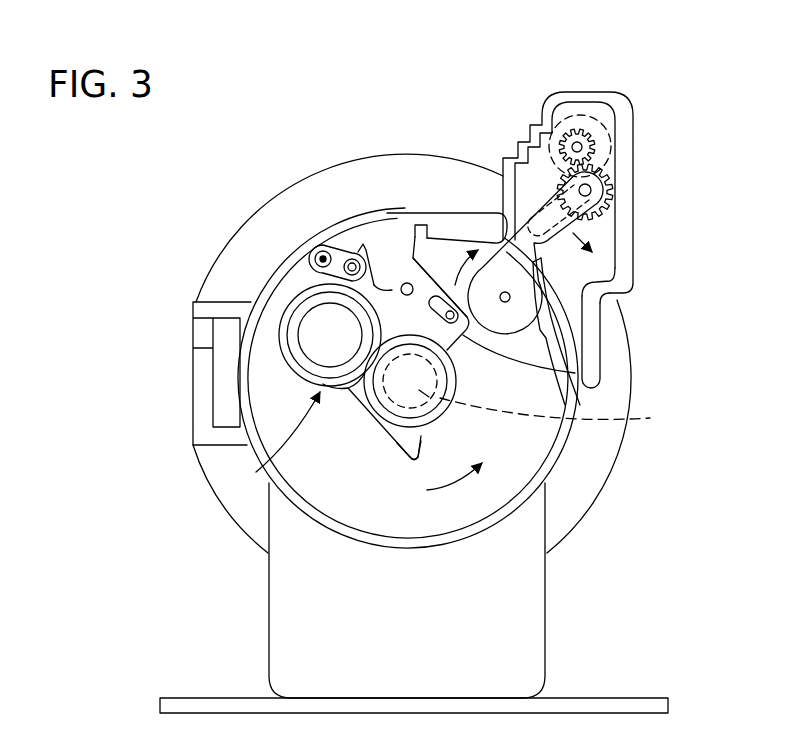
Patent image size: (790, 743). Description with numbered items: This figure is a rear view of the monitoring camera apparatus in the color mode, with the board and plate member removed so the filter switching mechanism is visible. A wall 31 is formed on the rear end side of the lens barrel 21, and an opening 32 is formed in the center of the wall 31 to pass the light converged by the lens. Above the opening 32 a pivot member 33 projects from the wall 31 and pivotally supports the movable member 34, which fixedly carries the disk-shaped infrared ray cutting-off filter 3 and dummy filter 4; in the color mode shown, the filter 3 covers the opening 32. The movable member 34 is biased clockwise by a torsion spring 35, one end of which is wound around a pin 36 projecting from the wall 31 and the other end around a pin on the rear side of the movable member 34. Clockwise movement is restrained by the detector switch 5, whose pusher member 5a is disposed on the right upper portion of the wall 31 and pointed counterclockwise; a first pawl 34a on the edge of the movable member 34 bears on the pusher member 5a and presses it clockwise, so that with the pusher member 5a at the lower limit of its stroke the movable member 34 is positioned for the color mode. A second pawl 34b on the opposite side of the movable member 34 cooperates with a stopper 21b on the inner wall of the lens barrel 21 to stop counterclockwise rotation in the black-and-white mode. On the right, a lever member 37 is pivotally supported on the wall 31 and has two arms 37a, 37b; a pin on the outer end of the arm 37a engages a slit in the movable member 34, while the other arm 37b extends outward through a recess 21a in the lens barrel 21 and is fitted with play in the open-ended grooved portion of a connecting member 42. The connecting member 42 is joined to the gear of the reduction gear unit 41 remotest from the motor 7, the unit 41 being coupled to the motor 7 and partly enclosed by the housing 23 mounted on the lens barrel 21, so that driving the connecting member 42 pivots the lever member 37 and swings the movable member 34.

The infrared ray cutting-off filter 3 is at (408, 450).
The dummy filter 4 is at (315, 348).
The detector switch 5 is at (447, 153).
The pusher member 5a is at (418, 224).
The motor 7 is at (613, 123).
The lens barrel 21 is at (566, 462).
The recess 21a is at (560, 277).
The stopper 21b is at (560, 333).
The housing 23 is at (578, 93).
The wall 31 is at (457, 510).
The opening 32 is at (642, 419).
The pivot member 33 is at (407, 283).
The movable member 34 is at (306, 358).
The first pawl 34a is at (395, 255).
The second pawl 34b is at (408, 452).
The torsion spring 35 is at (345, 256).
The pin 36 is at (313, 245).
The lever member 37 is at (548, 310).
The arm 37a is at (560, 367).
The arm 37b is at (525, 262).
The reduction gear unit 41 is at (610, 150).
The connecting member 42 is at (618, 212).